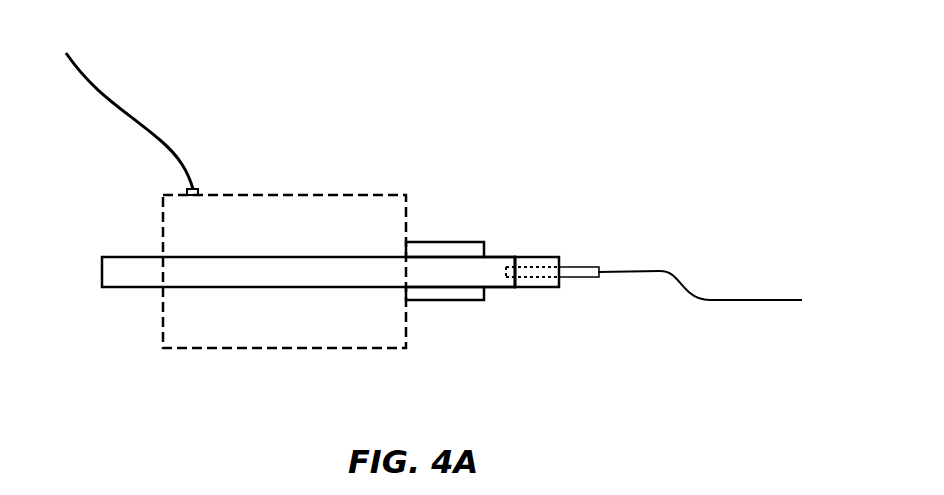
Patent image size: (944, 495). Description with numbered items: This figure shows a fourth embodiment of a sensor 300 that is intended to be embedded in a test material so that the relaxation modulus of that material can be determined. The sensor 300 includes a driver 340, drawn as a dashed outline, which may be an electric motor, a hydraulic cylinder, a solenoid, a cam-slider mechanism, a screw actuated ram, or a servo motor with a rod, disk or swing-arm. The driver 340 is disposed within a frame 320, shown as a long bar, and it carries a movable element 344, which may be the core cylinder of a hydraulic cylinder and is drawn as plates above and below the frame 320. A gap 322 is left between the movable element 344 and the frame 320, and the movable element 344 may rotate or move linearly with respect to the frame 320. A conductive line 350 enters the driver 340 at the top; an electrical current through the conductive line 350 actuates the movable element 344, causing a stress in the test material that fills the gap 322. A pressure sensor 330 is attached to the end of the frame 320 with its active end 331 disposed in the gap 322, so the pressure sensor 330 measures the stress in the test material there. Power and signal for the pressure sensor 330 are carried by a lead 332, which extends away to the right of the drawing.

The sensor 300 is at (398, 175).
The frame 320 is at (132, 259).
The gap 322 is at (496, 256).
The pressure sensor 330 is at (577, 266).
The active end 331 is at (504, 272).
The lead 332 is at (682, 277).
The driver 340 is at (278, 225).
The movable element 344 is at (430, 293).
The conductive line 350 is at (93, 88).